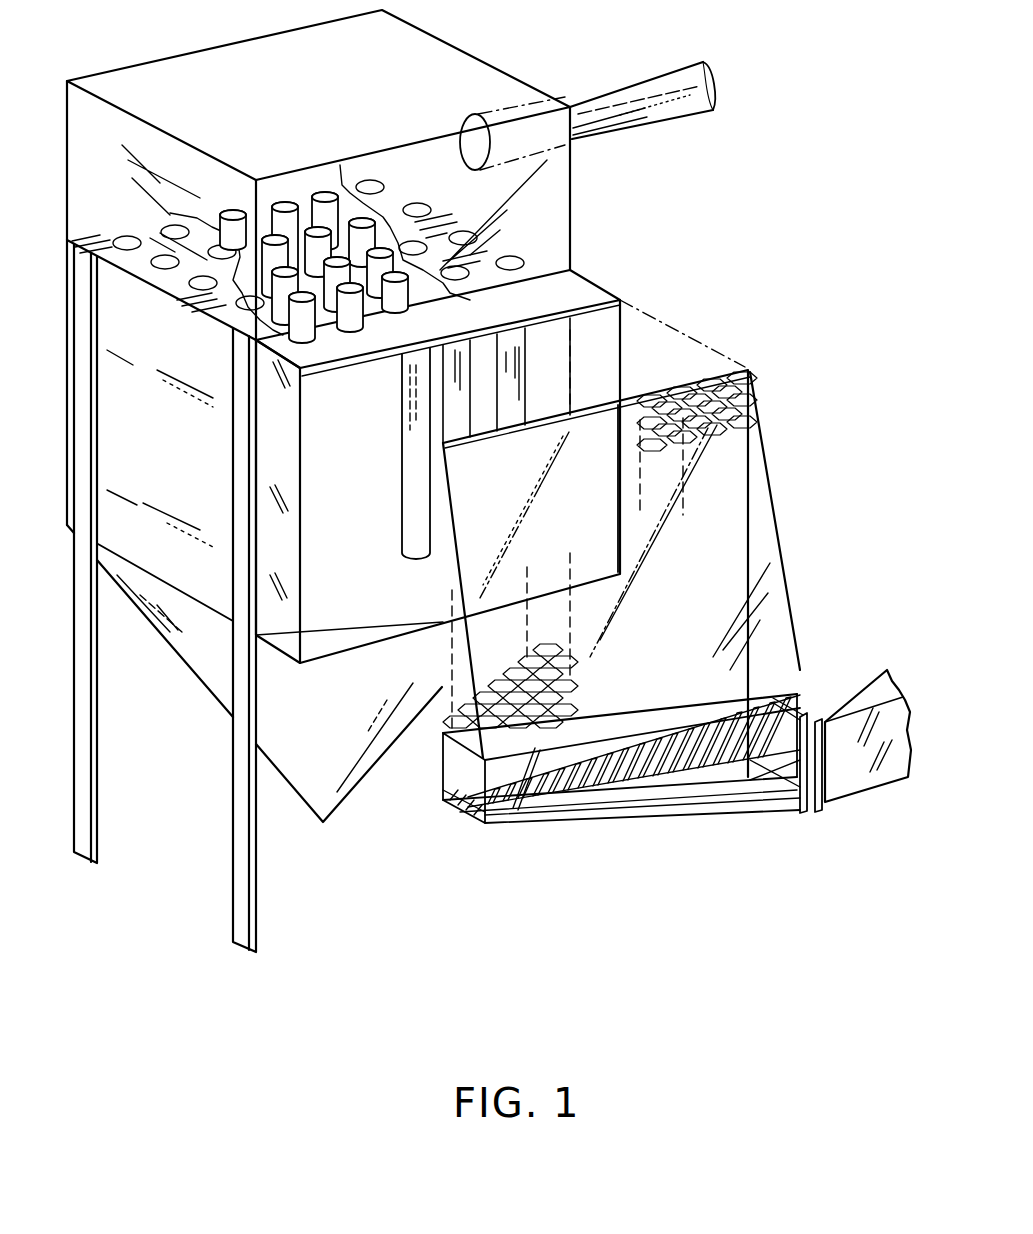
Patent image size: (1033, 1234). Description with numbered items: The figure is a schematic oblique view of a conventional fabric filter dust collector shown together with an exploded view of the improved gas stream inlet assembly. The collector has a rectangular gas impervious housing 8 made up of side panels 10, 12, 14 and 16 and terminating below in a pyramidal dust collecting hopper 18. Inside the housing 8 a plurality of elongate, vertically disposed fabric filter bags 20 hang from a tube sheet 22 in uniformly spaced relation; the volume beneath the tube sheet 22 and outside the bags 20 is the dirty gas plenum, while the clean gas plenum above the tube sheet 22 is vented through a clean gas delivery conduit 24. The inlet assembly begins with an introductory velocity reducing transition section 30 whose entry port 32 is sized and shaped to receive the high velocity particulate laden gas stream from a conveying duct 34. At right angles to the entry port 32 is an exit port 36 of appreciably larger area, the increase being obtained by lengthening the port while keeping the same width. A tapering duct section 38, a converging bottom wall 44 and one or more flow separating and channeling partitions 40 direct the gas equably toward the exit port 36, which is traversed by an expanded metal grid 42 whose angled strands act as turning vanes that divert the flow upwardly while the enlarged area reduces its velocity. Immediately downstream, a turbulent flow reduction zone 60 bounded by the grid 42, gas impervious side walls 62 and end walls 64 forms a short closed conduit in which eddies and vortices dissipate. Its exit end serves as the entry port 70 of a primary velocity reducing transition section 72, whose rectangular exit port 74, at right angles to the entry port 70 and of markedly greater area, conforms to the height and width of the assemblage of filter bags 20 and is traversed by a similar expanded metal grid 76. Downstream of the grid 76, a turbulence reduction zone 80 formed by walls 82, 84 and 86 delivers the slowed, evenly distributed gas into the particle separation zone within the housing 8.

The housing 8 is at (57, 318).
The side panel 10 is at (213, 210).
The side panel 12 is at (418, 200).
The side panel 14 is at (346, 326).
The side panel 16 is at (176, 300).
The pyramidal dust collecting hopper 18 is at (327, 822).
The fabric filter bag 20 is at (119, 238).
The tube sheet 22 is at (340, 165).
The clean gas delivery conduit 24 is at (617, 83).
The introductory velocity reducing transition section 30 is at (775, 822).
The entry port 32 is at (763, 790).
The conveying duct 34 is at (866, 775).
The exit port 36 is at (547, 812).
The tapering duct section 38 is at (632, 810).
The flow separating and channeling partition 40 is at (600, 797).
The expanded metal grid 42 is at (458, 808).
The bottom wall 44 is at (683, 813).
The turbulent flow reduction zone 60 is at (443, 762).
The side wall 62 is at (450, 739).
The end wall 64 is at (442, 787).
The entry port 70 is at (795, 672).
The primary velocity reducing transition section 72 is at (784, 540).
The exit port 74 is at (445, 640).
The expanded metal grid 76 is at (682, 400).
The turbulence reduction zone 80 is at (578, 267).
The wall 82 is at (288, 432).
The wall 84 is at (407, 342).
The wall 86 is at (739, 428).